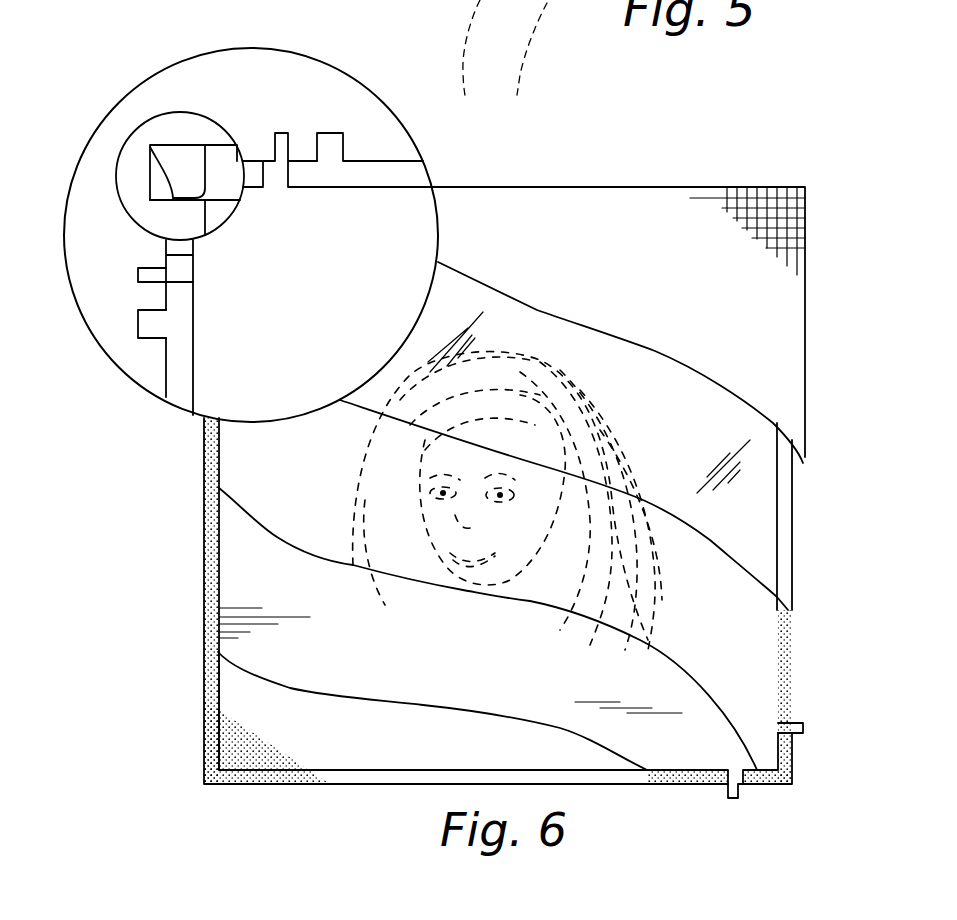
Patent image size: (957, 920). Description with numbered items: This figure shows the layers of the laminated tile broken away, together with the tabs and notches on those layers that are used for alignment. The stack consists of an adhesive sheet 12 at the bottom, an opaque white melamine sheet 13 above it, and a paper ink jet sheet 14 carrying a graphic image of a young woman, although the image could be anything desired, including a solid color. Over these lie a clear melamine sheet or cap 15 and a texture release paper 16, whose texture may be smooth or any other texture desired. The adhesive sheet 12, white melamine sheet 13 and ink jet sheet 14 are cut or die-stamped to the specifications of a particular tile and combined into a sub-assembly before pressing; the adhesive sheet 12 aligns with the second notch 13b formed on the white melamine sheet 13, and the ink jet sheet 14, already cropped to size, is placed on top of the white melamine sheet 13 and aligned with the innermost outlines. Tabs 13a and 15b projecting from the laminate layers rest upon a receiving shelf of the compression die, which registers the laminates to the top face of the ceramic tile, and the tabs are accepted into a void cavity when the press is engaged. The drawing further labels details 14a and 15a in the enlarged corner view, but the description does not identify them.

The adhesive sheet 12 is at (238, 710).
The opaque white melamine sheet 13 is at (245, 578).
The tab 13a is at (290, 137).
The second notch 13b is at (275, 172).
The paper ink jet sheet 14 is at (250, 470).
The pocket 14a is at (182, 155).
The clear melamine sheet or cap 15 is at (157, 223).
The lip 15a is at (150, 147).
The tab 15b is at (336, 150).
The texture release paper 16 is at (783, 362).